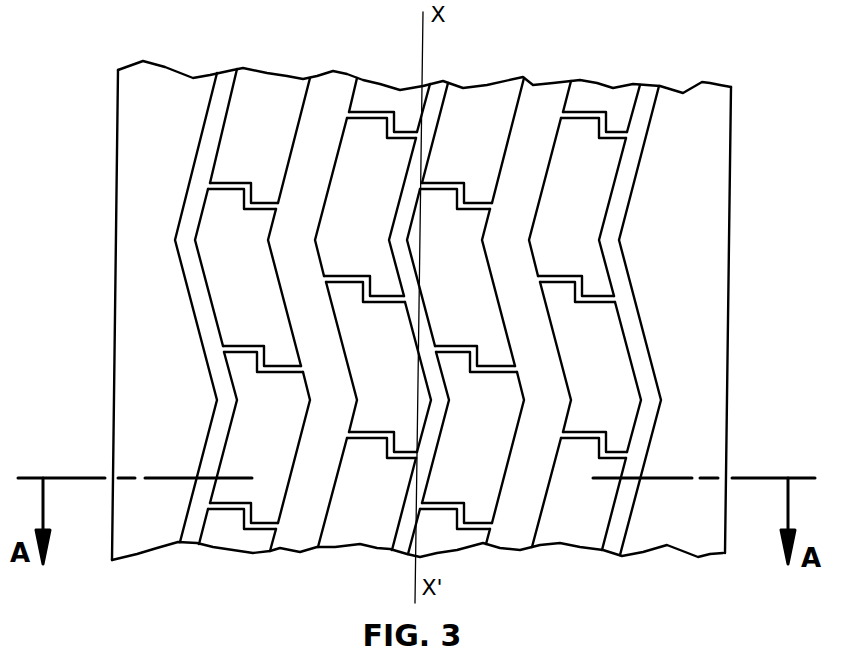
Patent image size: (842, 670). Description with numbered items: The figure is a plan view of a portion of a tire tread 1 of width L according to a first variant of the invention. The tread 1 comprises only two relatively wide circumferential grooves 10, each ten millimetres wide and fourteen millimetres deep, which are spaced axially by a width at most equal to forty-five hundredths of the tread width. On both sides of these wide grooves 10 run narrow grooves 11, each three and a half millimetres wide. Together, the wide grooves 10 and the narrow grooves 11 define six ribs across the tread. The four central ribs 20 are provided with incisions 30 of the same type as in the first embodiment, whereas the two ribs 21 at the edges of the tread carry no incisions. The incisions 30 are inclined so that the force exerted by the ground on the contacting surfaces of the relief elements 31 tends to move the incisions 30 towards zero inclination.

The tread 1 is at (458, 310).
The wide circumferential grooves 10 is at (431, 275).
The narrow grooves 11 is at (437, 277).
The central ribs 20 is at (427, 358).
The edge ribs 21 is at (418, 315).
The incisions 30 is at (417, 358).
The relief elements 31 is at (366, 349).